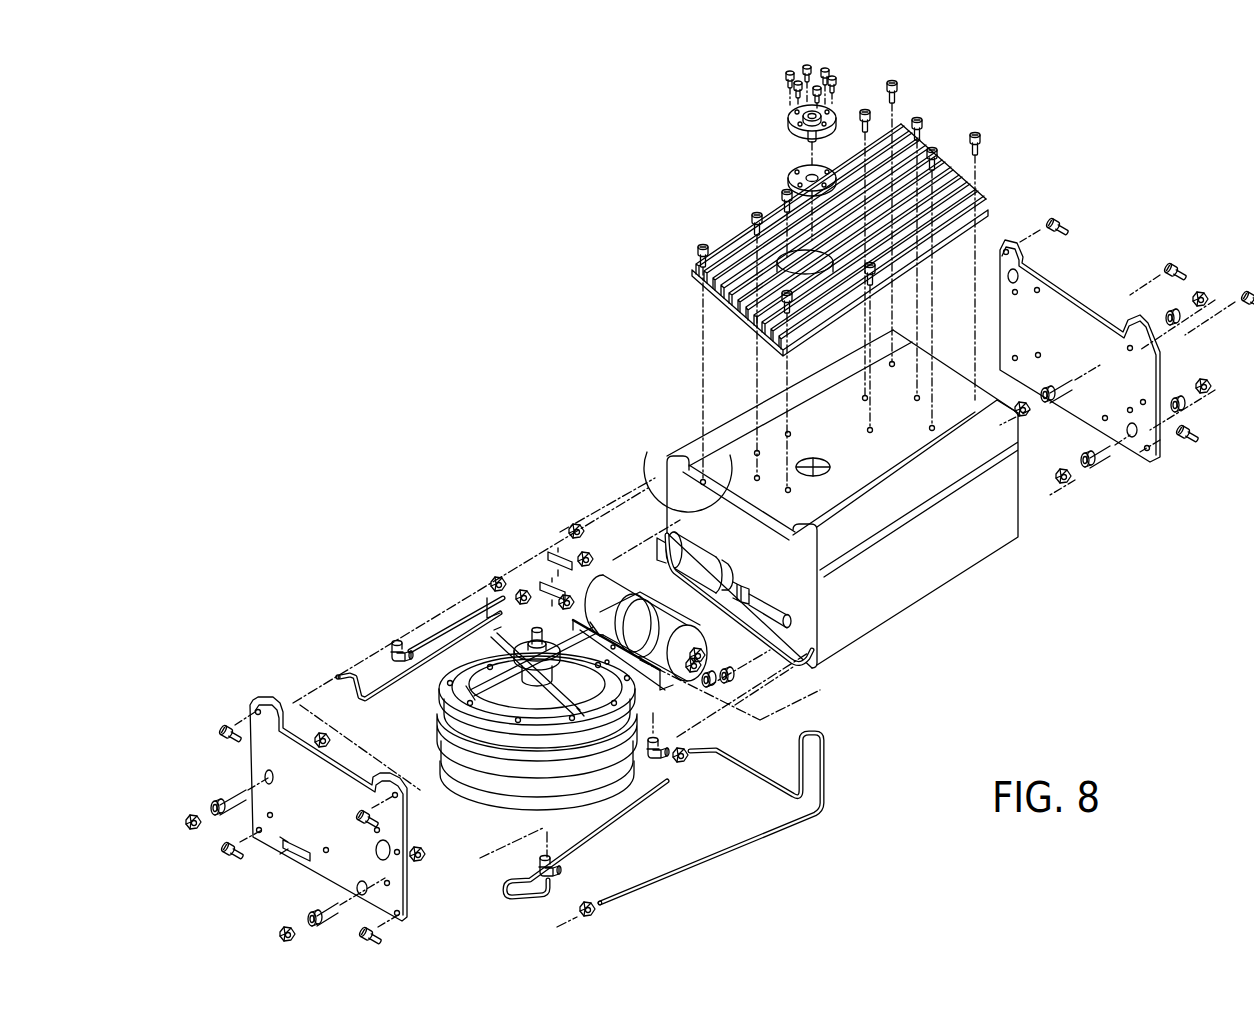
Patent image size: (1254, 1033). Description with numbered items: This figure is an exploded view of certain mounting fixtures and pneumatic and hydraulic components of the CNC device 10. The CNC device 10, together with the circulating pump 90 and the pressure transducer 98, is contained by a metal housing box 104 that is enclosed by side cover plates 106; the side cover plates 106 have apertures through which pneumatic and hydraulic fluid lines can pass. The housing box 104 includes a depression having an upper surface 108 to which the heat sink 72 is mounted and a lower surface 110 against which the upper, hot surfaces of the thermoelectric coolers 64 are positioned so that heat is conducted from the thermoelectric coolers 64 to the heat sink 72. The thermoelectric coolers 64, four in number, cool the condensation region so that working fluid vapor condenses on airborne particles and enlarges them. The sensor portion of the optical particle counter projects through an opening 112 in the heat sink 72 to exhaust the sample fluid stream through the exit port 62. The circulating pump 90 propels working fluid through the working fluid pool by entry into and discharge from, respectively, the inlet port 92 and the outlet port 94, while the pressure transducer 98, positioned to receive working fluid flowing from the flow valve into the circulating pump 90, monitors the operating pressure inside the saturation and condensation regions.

The CNC device 10 is at (718, 505).
The tubular exit port 62 is at (537, 628).
The thermoelectric coolers 64 is at (500, 652).
The heat sink 72 is at (940, 180).
The circulating pump 90 is at (613, 597).
The inlet port 92 is at (627, 753).
The outlet port 94 is at (535, 815).
The pressure transducer 98 is at (782, 607).
The housing box 104 is at (890, 458).
The side cover plates 106 is at (1067, 317).
The upper surface 108 is at (726, 483).
The lower surface 110 is at (675, 495).
The opening 112 is at (790, 250).